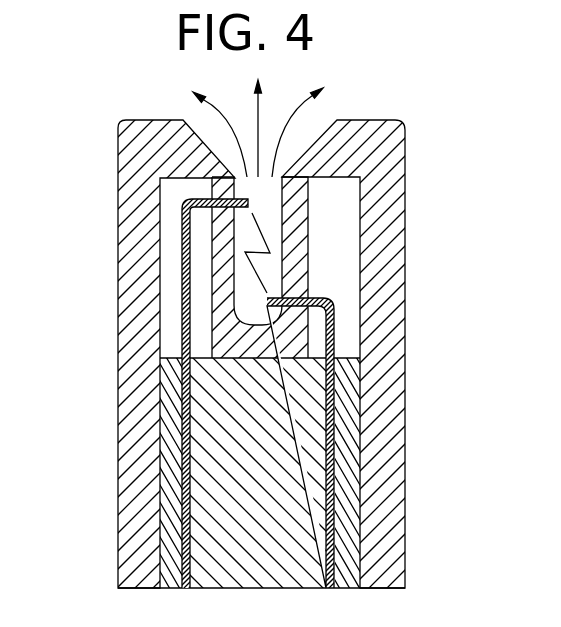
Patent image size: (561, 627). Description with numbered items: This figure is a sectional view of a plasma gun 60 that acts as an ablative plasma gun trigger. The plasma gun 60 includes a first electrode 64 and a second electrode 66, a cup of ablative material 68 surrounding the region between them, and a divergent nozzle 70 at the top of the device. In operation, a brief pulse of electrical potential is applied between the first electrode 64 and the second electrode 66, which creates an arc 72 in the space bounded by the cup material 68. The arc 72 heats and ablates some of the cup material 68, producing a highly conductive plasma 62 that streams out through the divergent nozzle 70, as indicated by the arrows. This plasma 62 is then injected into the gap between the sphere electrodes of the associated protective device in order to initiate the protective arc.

The igniter assembly 60 is at (112, 92).
The flame / plasma discharge 62 is at (258, 110).
The first electrode 64 is at (182, 308).
The second electrode 66 is at (336, 326).
The insulator 68 is at (298, 278).
The housing shell 70 is at (330, 145).
The spark gap 72 is at (263, 232).